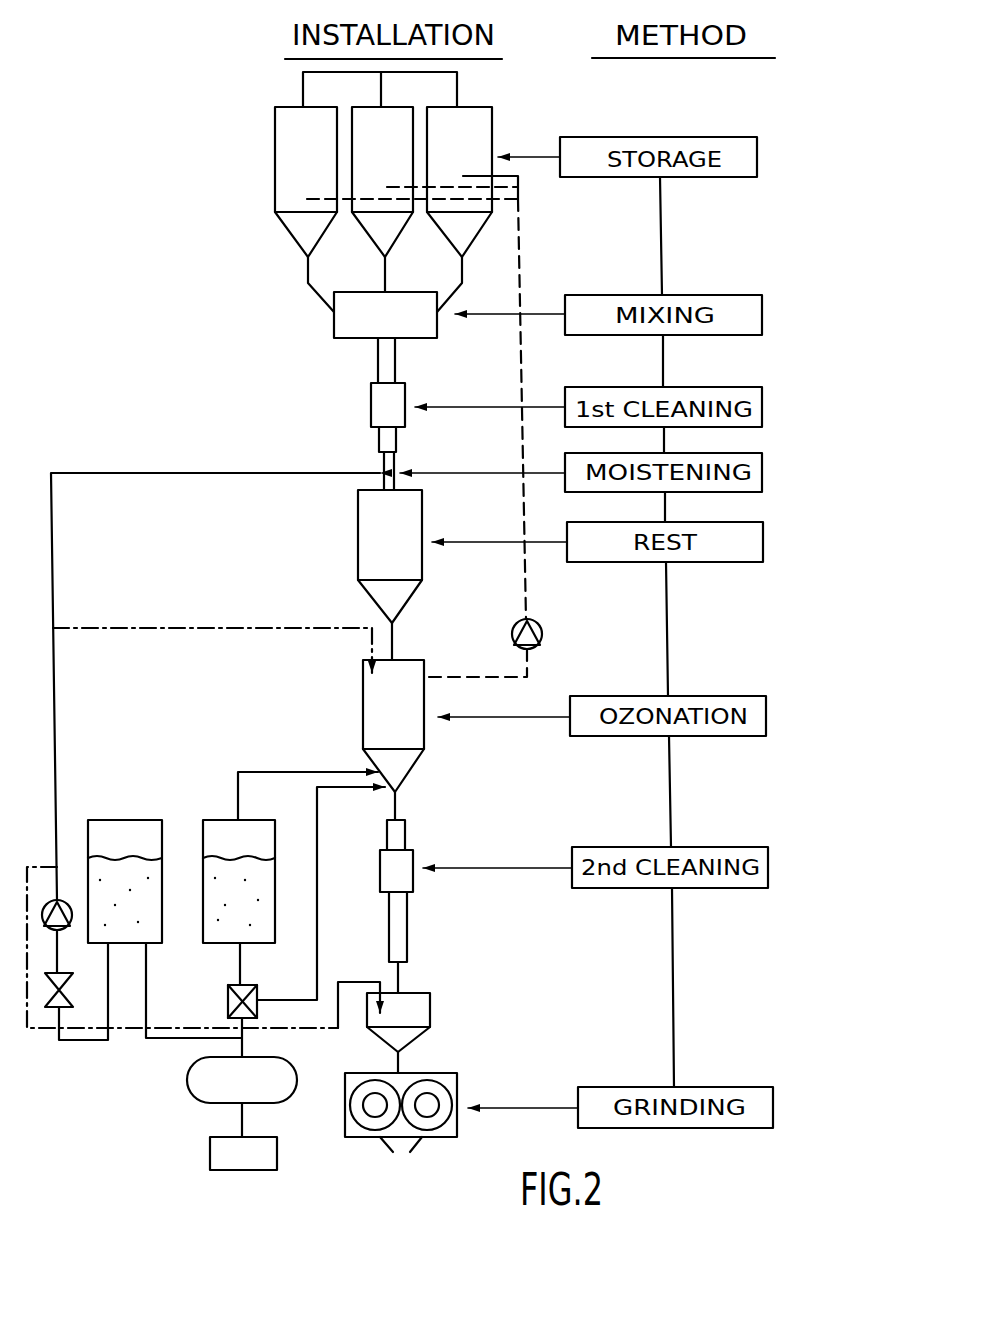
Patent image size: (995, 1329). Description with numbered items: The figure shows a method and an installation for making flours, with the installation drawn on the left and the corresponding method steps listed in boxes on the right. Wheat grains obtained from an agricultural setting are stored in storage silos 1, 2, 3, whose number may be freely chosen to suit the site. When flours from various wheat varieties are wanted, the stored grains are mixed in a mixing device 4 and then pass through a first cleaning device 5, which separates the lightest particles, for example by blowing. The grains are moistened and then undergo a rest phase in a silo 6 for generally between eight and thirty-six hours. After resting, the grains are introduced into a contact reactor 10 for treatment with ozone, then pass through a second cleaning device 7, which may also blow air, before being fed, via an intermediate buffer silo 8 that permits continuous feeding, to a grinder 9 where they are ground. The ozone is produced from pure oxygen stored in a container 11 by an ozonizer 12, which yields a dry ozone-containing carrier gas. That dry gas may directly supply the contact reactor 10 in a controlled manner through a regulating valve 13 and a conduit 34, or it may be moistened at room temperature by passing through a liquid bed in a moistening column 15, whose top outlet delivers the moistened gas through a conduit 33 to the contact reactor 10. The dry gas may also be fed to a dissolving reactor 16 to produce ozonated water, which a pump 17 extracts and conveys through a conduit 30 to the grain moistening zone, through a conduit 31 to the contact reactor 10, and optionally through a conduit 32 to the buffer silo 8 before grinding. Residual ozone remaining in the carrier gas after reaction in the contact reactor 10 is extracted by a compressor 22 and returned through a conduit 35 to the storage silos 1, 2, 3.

The storage silo 1 is at (314, 165).
The storage silo 2 is at (391, 165).
The storage silo 3 is at (467, 165).
The mixing device 4 is at (350, 323).
The first cleaning device 5 is at (373, 398).
The rest silo 6 is at (372, 547).
The second cleaning device 7 is at (390, 872).
The intermediate buffer silo 8 is at (370, 1027).
The grinder 9 is at (357, 1102).
The contact reactor 10 is at (375, 717).
The oxygen container 11 is at (230, 1157).
The ozonizer 12 is at (212, 1093).
The regulating valve 13 is at (228, 1000).
The moistening column 15 is at (267, 900).
The dissolving reactor 16 is at (148, 900).
The pump 17 is at (72, 912).
The compressor 22 is at (542, 640).
The conduit 30 is at (55, 565).
The conduit 31 is at (272, 626).
The conduit 32 is at (370, 982).
The conduit 33 is at (292, 772).
The conduit 34 is at (358, 788).
The conduit 35 is at (520, 270).